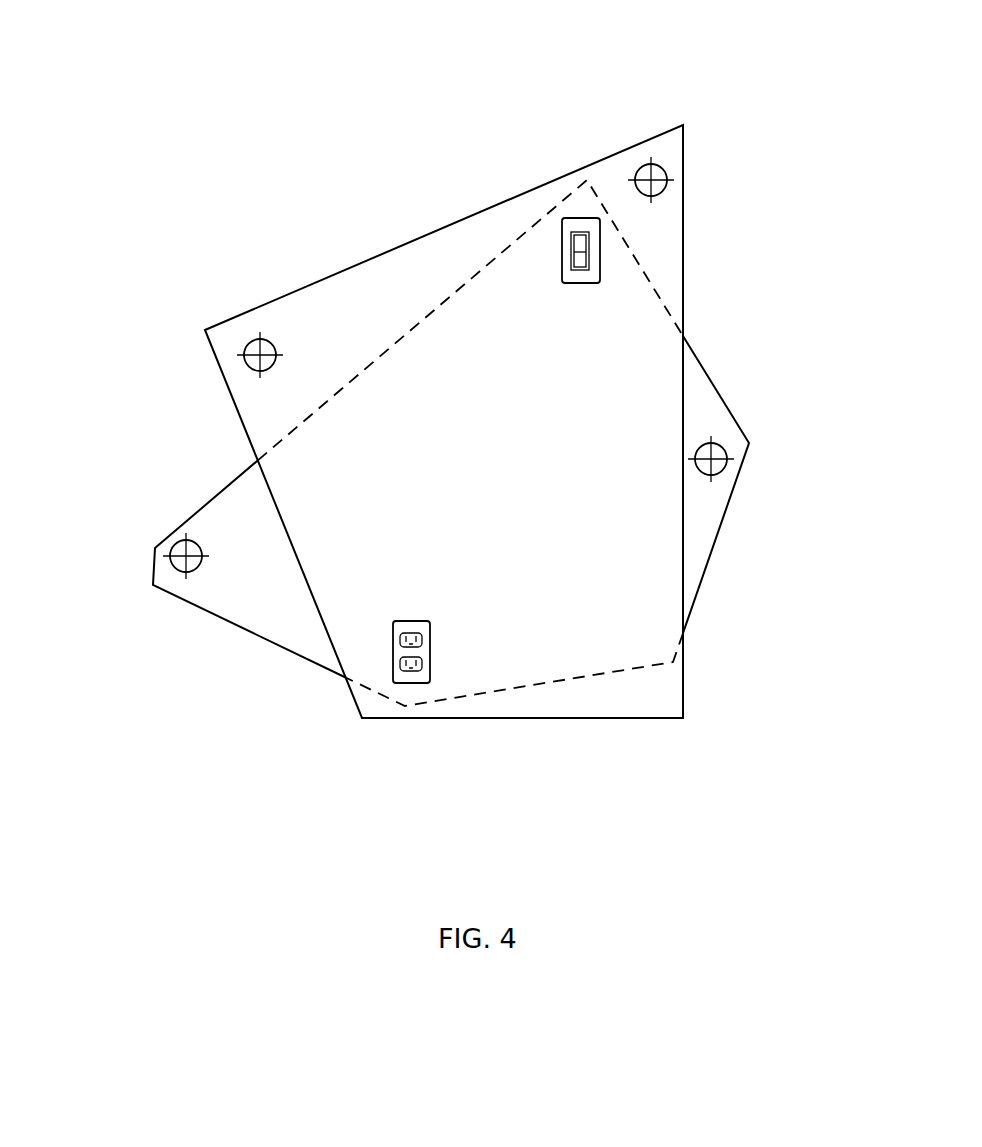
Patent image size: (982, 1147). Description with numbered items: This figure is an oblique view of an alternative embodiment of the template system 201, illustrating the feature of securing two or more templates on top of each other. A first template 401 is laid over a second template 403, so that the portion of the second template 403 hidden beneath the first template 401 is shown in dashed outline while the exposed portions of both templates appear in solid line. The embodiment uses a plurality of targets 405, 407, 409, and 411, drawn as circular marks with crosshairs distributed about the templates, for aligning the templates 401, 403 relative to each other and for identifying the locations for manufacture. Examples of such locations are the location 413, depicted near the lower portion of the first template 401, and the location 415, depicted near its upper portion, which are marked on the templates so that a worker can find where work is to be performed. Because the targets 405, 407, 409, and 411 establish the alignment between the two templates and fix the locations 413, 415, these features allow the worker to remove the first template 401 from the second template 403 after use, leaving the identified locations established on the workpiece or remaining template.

The system 201 is at (142, 58).
The template 401 is at (368, 258).
The template 403 is at (252, 635).
The target 405 is at (172, 541).
The target 407 is at (248, 343).
The target 409 is at (668, 172).
The target 411 is at (723, 447).
The location for manufacture 413 is at (452, 680).
The location for manufacture 415 is at (618, 254).